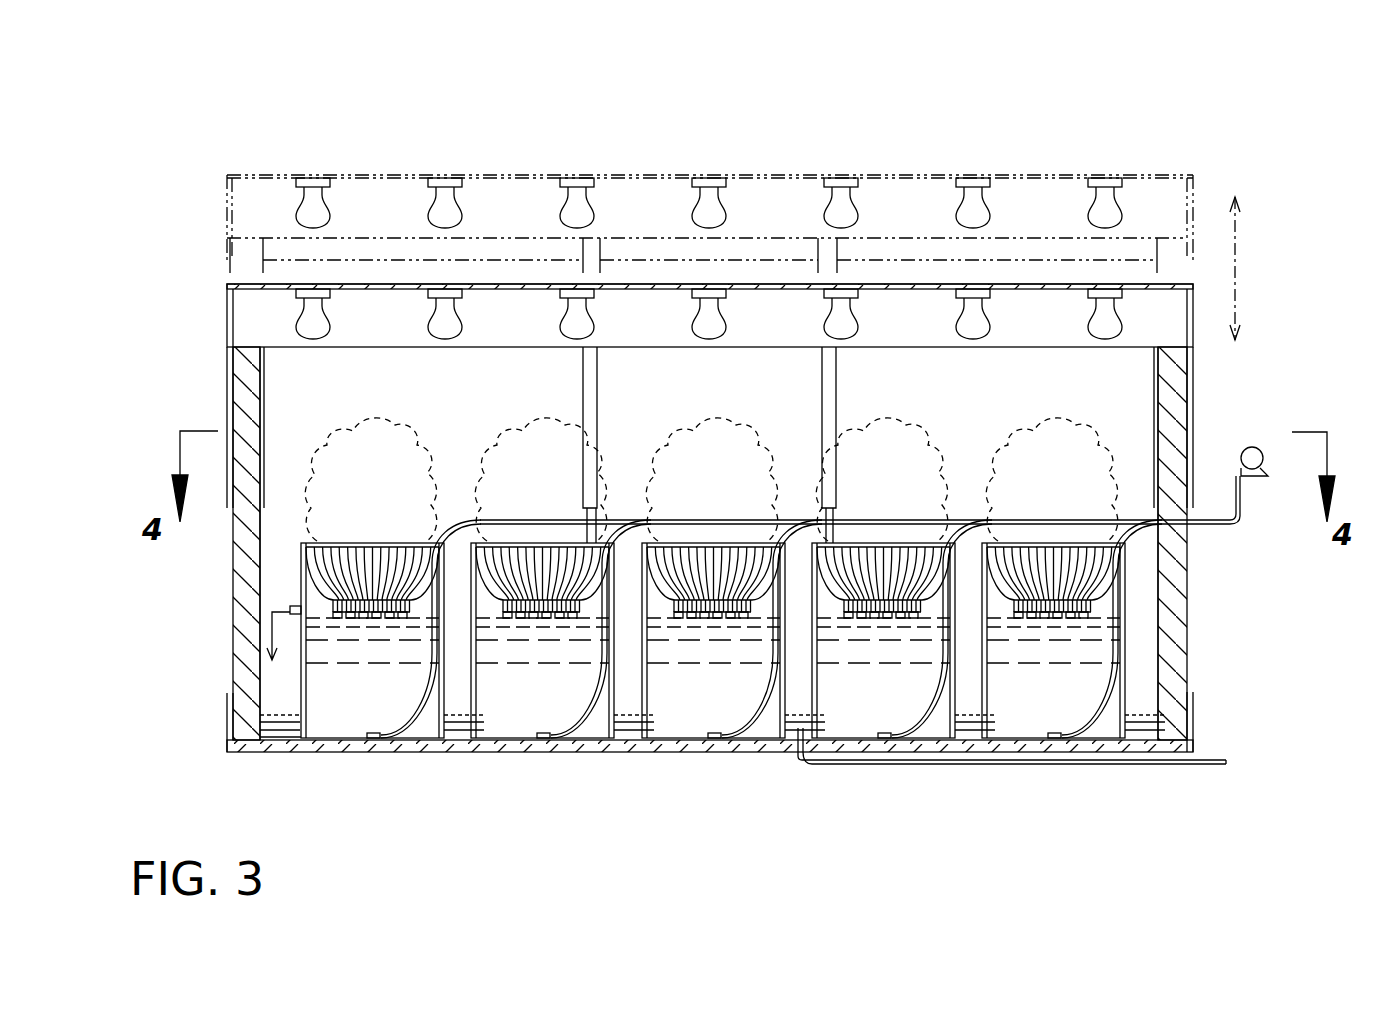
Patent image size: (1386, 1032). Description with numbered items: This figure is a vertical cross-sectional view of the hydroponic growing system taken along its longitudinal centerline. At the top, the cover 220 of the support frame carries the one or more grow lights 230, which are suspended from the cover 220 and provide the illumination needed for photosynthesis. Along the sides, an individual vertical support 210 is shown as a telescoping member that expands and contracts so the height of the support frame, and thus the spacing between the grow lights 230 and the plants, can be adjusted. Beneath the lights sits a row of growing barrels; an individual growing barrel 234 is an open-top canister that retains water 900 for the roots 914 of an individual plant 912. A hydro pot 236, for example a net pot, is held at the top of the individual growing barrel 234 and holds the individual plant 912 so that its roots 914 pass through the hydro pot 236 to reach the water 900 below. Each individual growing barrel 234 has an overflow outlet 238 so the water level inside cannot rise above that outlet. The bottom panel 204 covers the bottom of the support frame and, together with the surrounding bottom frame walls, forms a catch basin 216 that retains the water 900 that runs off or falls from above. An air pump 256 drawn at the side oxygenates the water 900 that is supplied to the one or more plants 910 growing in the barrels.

The bottom panel 204 is at (663, 745).
The individual vertical support 210 is at (1175, 413).
The catch basin 216 is at (212, 693).
The cover 220 is at (1030, 285).
The grow lights 230 is at (835, 320).
The individual growing barrel 234 is at (472, 690).
The hydro pot 236 is at (527, 578).
The overflow outlet 238 is at (292, 606).
The air pump 256 is at (1250, 447).
The water 900 is at (282, 730).
The plants 910 is at (543, 462).
The individual plant 912 is at (1084, 507).
The roots 914 is at (872, 605).